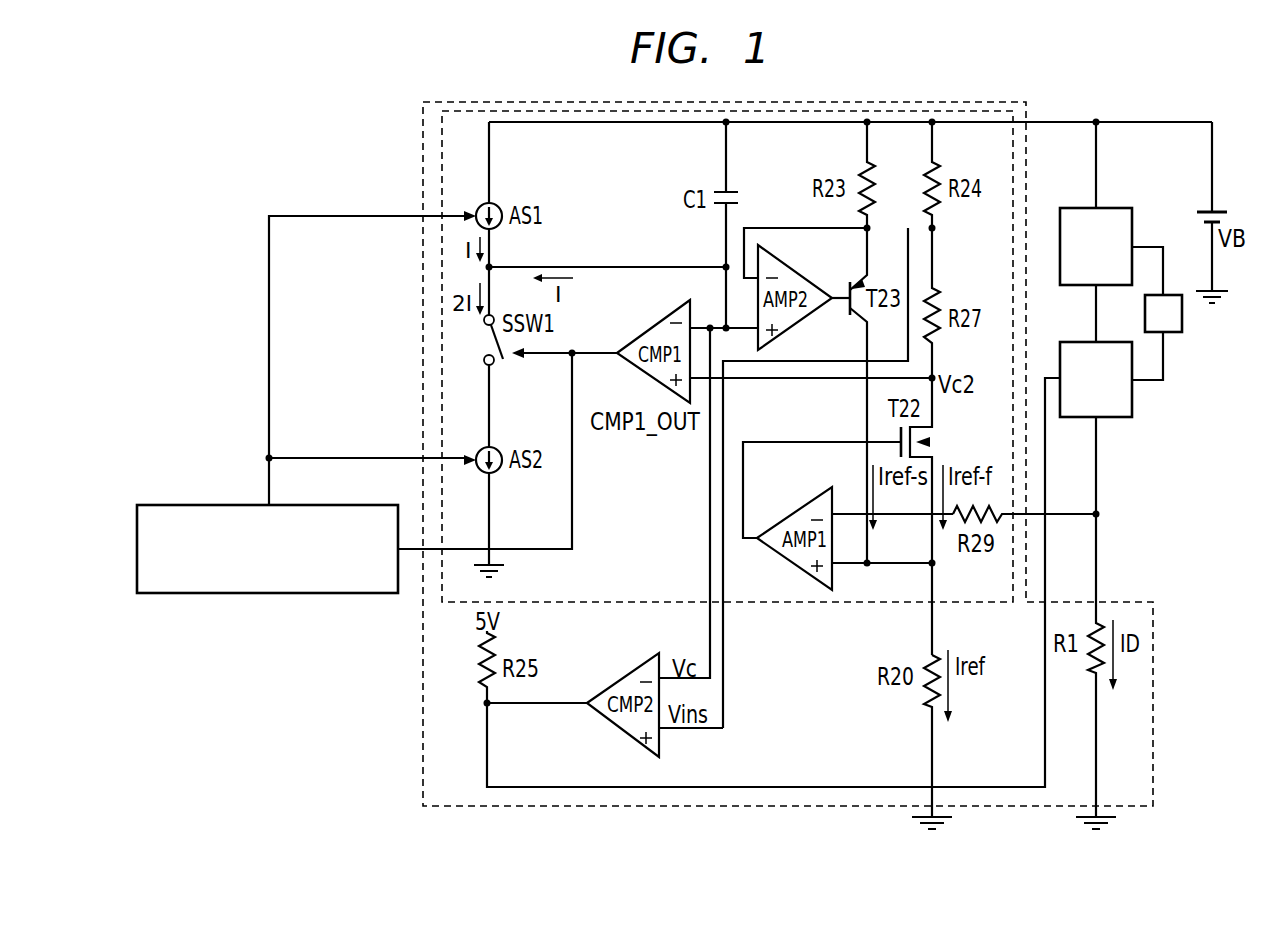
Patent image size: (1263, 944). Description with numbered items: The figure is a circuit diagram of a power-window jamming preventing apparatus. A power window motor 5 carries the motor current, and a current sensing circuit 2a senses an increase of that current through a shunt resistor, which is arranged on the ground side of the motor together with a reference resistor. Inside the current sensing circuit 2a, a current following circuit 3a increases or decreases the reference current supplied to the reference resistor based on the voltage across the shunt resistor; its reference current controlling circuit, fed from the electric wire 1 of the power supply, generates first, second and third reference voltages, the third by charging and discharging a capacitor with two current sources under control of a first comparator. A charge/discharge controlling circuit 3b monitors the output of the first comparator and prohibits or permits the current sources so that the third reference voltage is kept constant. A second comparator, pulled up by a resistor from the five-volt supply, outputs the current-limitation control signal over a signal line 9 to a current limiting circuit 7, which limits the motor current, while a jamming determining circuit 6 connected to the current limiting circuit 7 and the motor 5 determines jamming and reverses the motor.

The electric wire 1 is at (1143, 122).
The current sensing circuit 2a is at (423, 741).
The current following circuit 3a is at (443, 260).
The charge/discharge controlling circuit 3b is at (193, 505).
The power window motor 5 is at (1107, 266).
The jamming determining circuit 6 is at (1172, 331).
The current limiting circuit 7 is at (1107, 397).
The signal line 9 is at (797, 784).